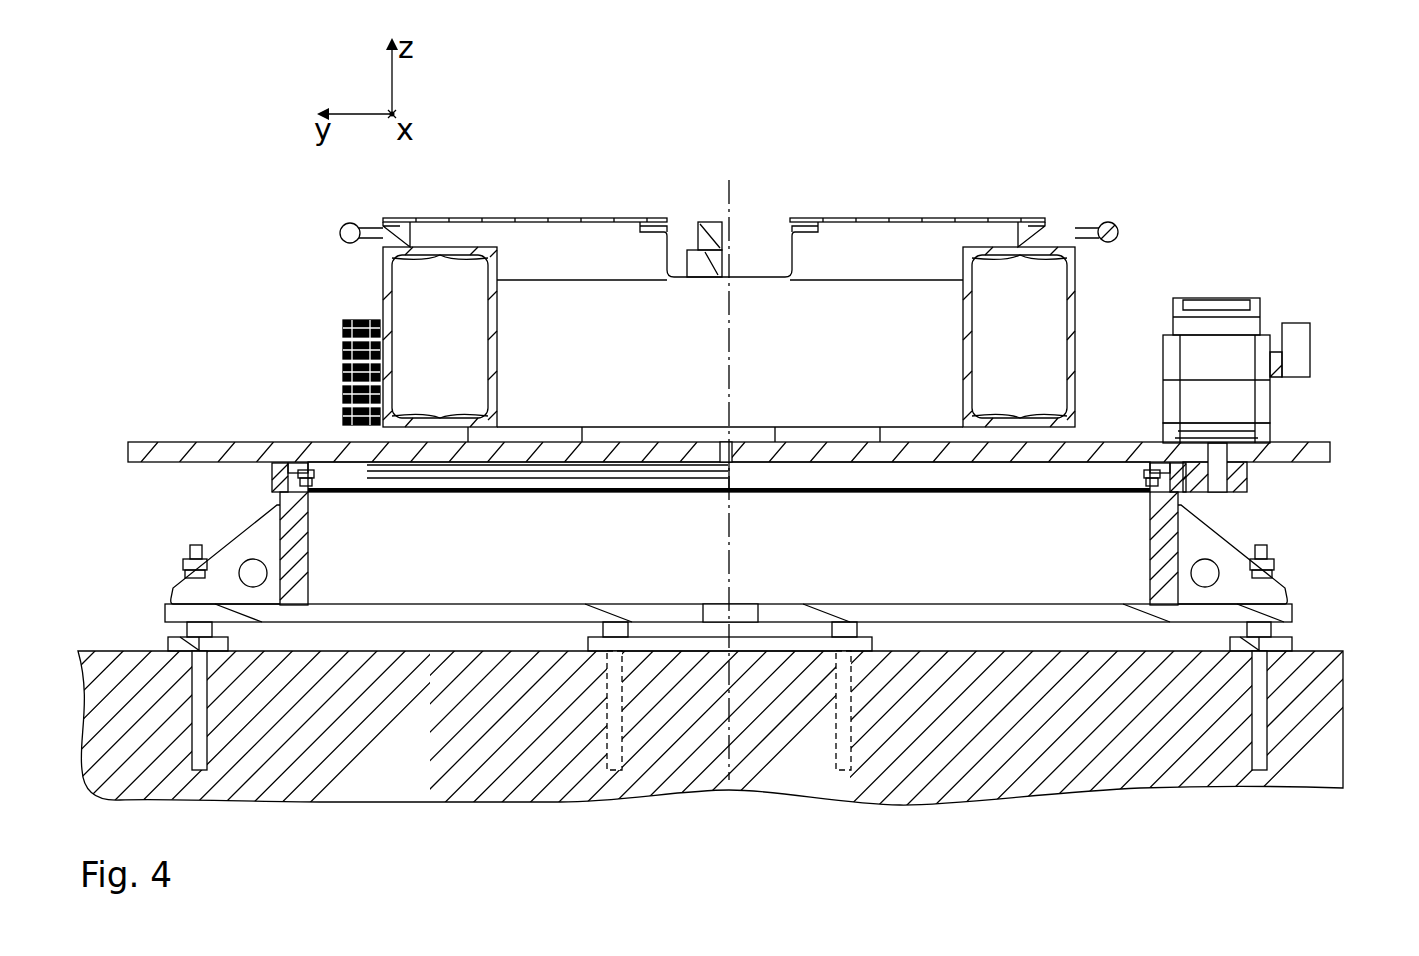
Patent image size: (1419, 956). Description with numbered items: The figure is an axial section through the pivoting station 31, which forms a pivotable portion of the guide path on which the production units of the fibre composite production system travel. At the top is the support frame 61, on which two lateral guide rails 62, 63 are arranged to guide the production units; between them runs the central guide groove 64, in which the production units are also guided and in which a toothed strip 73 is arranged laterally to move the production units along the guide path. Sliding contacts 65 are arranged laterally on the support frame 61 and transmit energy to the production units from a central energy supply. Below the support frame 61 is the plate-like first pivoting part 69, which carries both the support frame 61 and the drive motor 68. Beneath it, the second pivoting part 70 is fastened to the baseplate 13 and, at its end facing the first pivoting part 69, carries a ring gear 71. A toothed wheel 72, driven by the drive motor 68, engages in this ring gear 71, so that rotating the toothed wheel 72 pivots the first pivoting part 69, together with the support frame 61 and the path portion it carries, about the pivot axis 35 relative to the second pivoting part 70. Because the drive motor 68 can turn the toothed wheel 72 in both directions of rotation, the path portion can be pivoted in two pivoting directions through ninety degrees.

The baseplate 13 is at (110, 655).
The pivoting station 31 is at (763, 410).
The pivot axis 35 is at (738, 215).
The support frame 61 is at (1075, 270).
The lateral guide rail 62 is at (1108, 222).
The lateral guide rail 63 is at (340, 233).
The central guide groove 64 is at (762, 240).
The sliding contacts 65 is at (340, 347).
The drive motor 68 is at (1225, 345).
The first pivoting part 69 is at (240, 448).
The second pivoting part 70 is at (278, 513).
The ring gear 71 is at (270, 477).
The toothed wheel 72 is at (1242, 478).
The toothed strip 73 is at (712, 222).